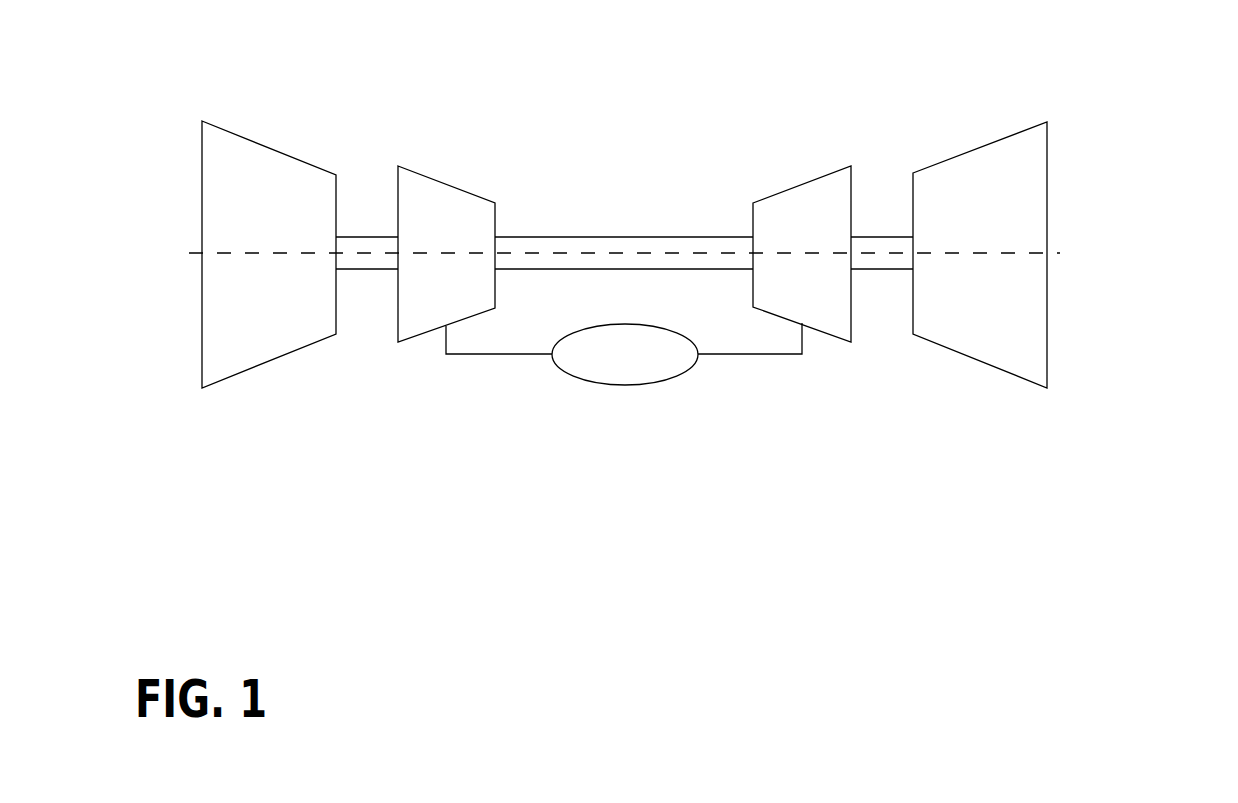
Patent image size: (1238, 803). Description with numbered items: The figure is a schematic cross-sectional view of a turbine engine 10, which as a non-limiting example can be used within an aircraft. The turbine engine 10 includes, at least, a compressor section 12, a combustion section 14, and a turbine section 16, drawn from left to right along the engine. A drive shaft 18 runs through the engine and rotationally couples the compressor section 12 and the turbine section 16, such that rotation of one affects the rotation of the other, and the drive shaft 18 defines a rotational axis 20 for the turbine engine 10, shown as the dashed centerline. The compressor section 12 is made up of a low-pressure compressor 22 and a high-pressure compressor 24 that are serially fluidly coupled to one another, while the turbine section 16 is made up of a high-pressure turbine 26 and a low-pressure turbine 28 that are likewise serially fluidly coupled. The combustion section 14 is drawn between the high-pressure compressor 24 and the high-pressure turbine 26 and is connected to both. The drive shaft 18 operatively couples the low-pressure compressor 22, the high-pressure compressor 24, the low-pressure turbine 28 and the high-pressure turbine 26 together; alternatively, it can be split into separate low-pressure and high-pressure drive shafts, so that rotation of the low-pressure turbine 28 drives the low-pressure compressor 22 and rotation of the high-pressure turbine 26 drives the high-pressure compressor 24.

The turbine engine 10 is at (1235, 133).
The compressor section 12 is at (226, 115).
The combustion section 14 is at (585, 380).
The turbine section 16 is at (969, 115).
The drive shaft 18 is at (625, 236).
The rotational axis 20 is at (1056, 250).
The low-pressure compressor 22 is at (305, 161).
The high-pressure compressor 24 is at (458, 187).
The high-pressure turbine 26 is at (853, 194).
The low-pressure turbine 28 is at (1047, 172).